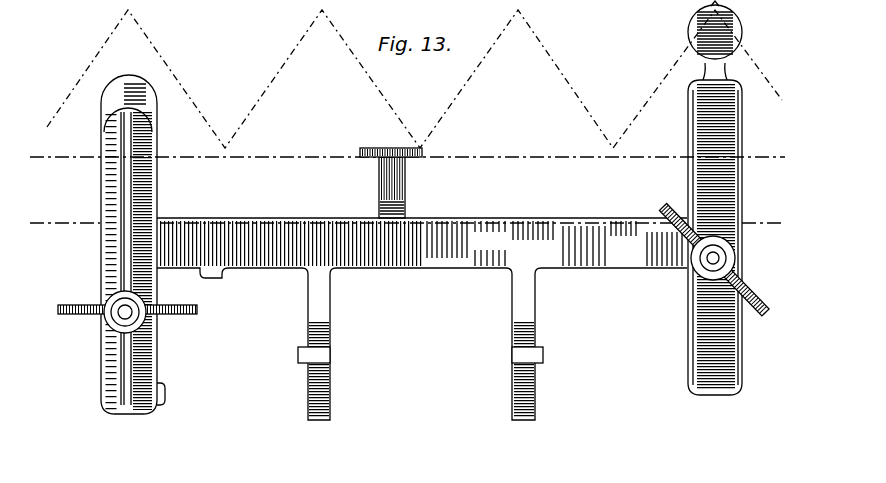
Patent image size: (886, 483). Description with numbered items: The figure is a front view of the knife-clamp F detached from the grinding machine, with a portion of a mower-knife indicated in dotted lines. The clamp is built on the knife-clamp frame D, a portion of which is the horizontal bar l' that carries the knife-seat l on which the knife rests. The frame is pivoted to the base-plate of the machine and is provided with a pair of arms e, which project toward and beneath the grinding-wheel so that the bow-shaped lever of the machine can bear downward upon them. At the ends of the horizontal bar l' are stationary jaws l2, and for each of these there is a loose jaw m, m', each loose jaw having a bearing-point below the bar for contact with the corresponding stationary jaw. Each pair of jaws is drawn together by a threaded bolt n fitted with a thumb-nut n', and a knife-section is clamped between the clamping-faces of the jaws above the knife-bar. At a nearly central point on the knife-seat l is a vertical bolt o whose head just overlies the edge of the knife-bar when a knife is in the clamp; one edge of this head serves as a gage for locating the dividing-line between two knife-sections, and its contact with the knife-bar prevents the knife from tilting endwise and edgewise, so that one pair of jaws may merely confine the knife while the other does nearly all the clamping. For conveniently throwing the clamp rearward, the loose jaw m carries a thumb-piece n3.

The knife-seat l is at (422, 309).
The horizontal bar l' is at (554, 243).
The stationary jaws l2 is at (129, 94).
The knife-clamp F is at (310, 239).
The knife-clamp frame D is at (330, 322).
The arms e is at (426, 356).
The vertical bolt o is at (391, 175).
The loose jaw m' is at (114, 244).
The loose jaw m is at (715, 237).
The thumb-piece n3 is at (723, 40).
The thumb-nut n' is at (420, 260).
The threaded bolt n is at (402, 299).